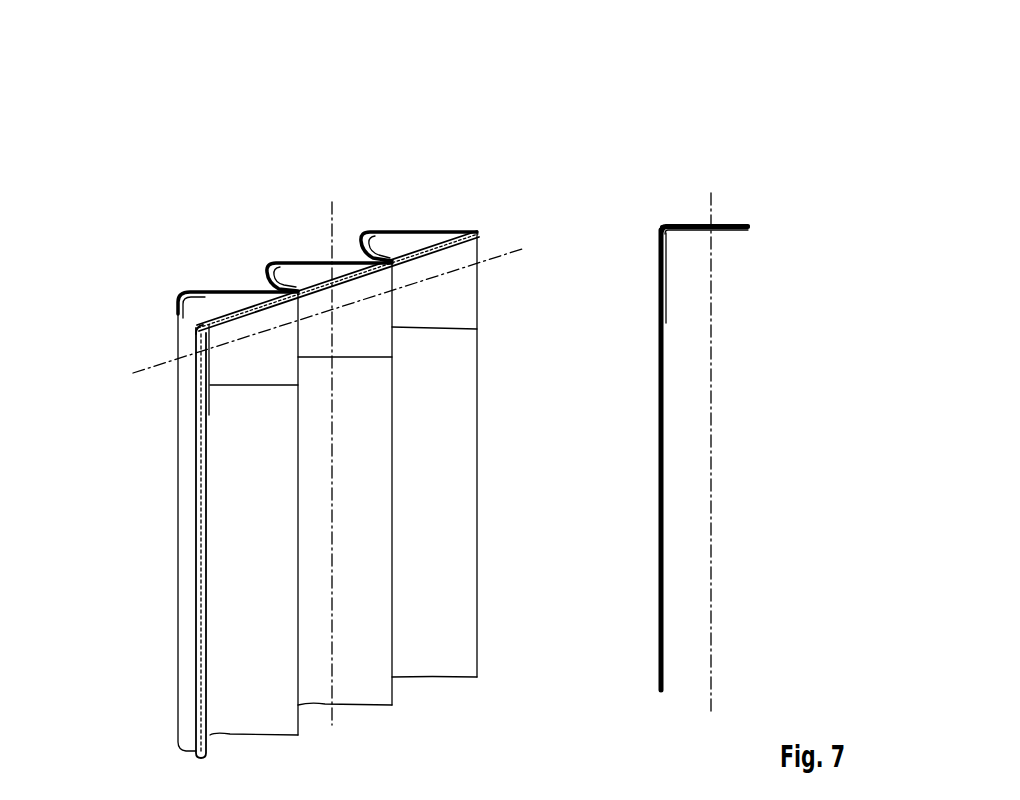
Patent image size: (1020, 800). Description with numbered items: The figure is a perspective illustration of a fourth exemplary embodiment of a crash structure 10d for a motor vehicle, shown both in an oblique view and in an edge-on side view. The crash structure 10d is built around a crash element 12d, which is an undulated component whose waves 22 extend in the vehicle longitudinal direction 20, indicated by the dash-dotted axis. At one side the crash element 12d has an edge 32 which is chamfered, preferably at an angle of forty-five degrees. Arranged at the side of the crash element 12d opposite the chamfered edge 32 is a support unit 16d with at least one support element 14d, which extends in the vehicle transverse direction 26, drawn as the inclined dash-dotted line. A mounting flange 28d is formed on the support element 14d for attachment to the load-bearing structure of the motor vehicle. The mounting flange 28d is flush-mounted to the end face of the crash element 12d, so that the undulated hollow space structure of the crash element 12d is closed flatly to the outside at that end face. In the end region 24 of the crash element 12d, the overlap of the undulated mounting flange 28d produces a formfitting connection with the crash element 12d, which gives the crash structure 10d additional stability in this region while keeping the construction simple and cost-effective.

The crash structure 10d is at (224, 188).
The crash element 12d is at (458, 613).
The support element 14d is at (230, 300).
The support unit 16d is at (205, 266).
The vehicle longitudinal direction 20 is at (330, 217).
The waves 22 is at (360, 687).
The end region 24 is at (158, 387).
The vehicle transverse direction 26 is at (137, 372).
The mounting flange 28d is at (403, 242).
The chamfered edge 32 is at (178, 302).